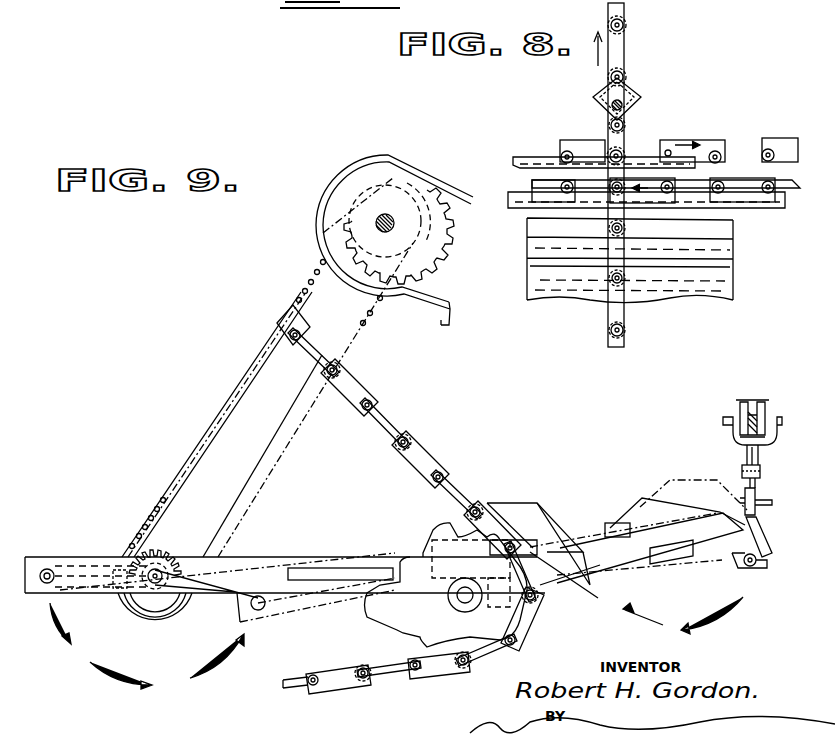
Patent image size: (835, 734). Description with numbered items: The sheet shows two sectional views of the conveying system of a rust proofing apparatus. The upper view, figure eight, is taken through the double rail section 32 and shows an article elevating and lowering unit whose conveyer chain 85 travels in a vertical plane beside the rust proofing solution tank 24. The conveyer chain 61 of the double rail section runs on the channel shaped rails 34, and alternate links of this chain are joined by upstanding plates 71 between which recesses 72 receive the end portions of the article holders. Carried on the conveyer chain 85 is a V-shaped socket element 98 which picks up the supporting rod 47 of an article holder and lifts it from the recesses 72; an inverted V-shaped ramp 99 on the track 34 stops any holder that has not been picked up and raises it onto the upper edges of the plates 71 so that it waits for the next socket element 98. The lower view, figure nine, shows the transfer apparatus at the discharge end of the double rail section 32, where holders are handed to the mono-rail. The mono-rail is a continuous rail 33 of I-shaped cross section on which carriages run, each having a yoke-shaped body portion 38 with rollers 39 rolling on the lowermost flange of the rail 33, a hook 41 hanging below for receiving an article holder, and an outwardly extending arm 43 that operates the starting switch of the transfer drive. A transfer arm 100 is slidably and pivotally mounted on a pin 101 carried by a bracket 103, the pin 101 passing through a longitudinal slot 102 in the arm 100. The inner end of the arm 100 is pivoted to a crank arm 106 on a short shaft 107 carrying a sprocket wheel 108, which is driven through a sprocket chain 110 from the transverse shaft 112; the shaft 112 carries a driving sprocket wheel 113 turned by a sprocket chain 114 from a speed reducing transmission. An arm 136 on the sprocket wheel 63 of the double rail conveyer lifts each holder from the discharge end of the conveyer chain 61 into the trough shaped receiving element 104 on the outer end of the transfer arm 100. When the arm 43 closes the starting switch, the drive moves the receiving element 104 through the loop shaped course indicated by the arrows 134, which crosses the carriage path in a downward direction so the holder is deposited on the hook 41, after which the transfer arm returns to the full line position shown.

In FIG. 8, the conveyer chain 85 is at (632, 62).
In FIG. 8, the V-shaped socket element 98 is at (630, 96).
In FIG. 8, the inverted V-shaped ramp 99 is at (625, 150).
In FIG. 8, the upstanding plates 71 is at (586, 140).
In FIG. 9, the upstanding plates 71 is at (428, 448).
In FIG. 8, the channel shaped rails 34 is at (680, 145).
In FIG. 8, the conveyer chain 61 is at (793, 145).
In FIG. 8, the rust proofing solution tank 24 is at (710, 254).
In FIG. 9, the shaft 112 is at (390, 214).
In FIG. 9, the driving sprocket wheel 113 is at (402, 240).
In FIG. 9, the sprocket chain 114 is at (420, 330).
In FIG. 9, the sprocket chain 110 is at (176, 465).
In FIG. 9, the sprocket wheel 108 is at (158, 541).
In FIG. 9, the shaft 107 is at (170, 534).
In FIG. 9, the crank arm 106 is at (90, 555).
In FIG. 9, the slot 102 is at (322, 556).
In FIG. 9, the transfer arm 100 is at (270, 556).
In FIG. 9, the bracket 103 is at (446, 585).
In FIG. 9, the arm 136 is at (363, 615).
In FIG. 9, the sprocket wheel 63 is at (428, 650).
In FIG. 9, the recesses 72 is at (400, 428).
In FIG. 9, the double rail section 32 is at (336, 703).
In FIG. 9, the pin 101 is at (553, 522).
In FIG. 9, the trough shaped receiving element 104 is at (558, 597).
In FIG. 9, the arrows 134 is at (622, 520).
In FIG. 9, the continuous rail 33 is at (752, 398).
In FIG. 9, the rollers 39 is at (770, 405).
In FIG. 9, the yoke-shaped body portion 38 is at (766, 452).
In FIG. 9, the outwardly extending arm 43 is at (764, 508).
In FIG. 9, the hook 41 is at (766, 532).
In FIG. 9, the supporting rod 47 is at (767, 565).